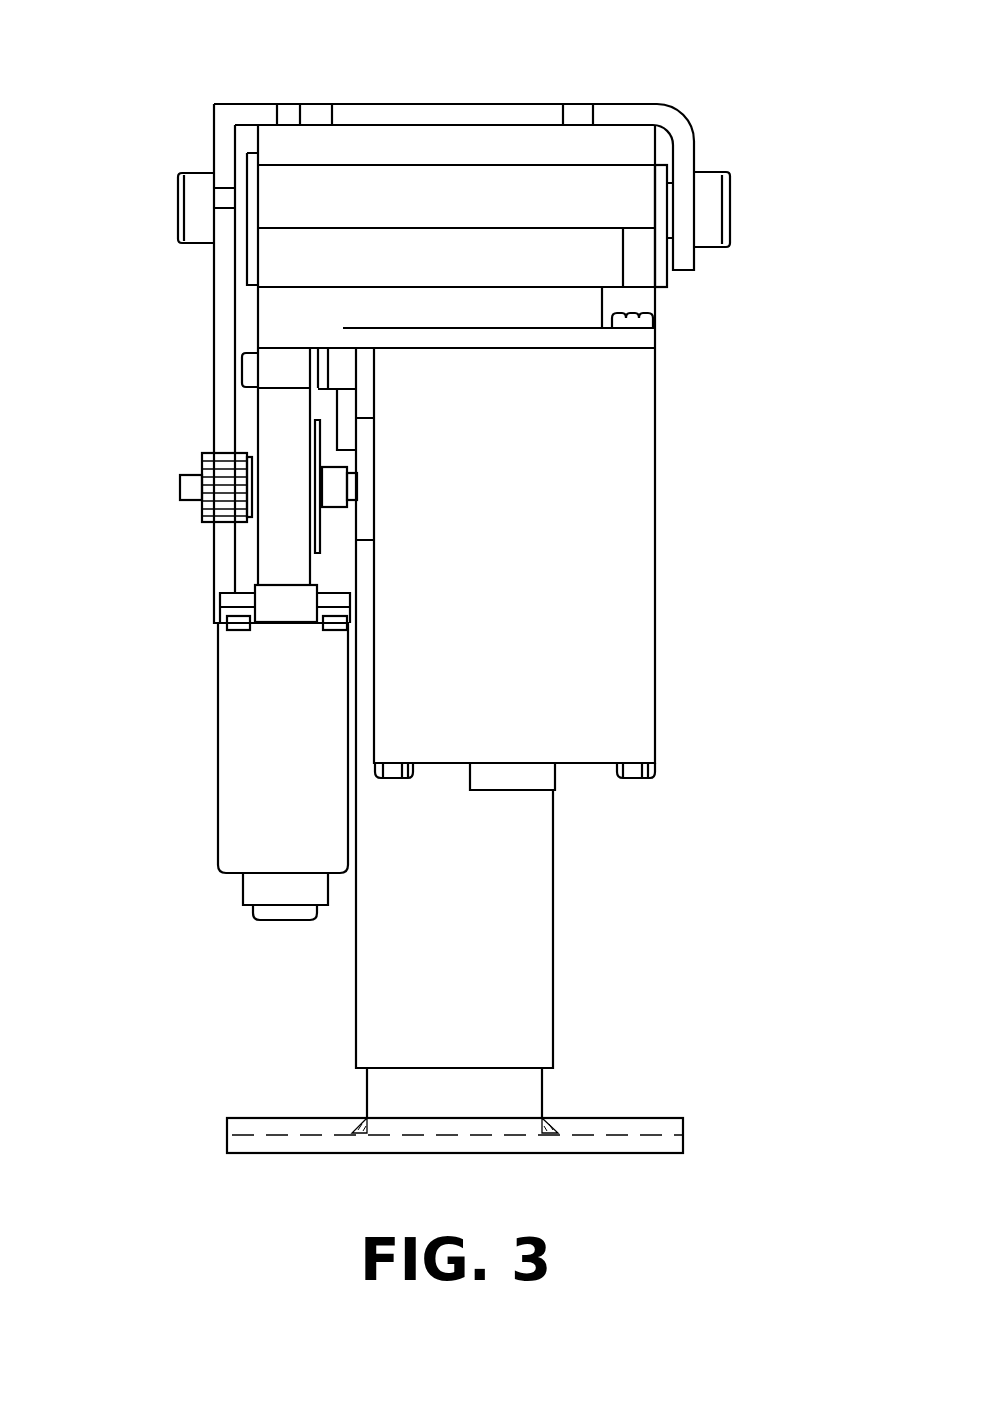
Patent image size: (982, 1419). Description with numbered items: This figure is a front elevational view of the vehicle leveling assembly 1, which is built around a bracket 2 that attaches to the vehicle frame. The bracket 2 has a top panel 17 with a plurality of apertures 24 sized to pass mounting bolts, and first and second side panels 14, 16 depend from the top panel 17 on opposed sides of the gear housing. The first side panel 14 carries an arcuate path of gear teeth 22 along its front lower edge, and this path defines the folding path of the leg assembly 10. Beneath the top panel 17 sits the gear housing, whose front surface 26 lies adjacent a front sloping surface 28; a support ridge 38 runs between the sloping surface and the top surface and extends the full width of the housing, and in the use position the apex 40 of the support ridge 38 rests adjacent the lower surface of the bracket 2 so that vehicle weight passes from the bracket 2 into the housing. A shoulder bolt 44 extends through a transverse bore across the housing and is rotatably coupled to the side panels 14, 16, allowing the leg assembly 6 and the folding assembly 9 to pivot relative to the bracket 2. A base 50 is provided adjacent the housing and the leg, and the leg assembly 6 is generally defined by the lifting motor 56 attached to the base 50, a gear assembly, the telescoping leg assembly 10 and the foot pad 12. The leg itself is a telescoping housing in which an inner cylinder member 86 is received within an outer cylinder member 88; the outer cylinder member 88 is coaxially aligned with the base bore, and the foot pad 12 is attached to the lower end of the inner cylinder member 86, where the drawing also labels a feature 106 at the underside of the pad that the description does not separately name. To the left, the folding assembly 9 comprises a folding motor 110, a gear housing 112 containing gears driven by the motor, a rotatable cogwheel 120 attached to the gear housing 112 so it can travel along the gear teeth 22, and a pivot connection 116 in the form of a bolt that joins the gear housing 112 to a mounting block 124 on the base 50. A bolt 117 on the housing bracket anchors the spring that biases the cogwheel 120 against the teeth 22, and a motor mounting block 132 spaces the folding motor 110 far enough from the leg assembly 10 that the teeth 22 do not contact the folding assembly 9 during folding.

The vehicle leveling assembly 1 is at (790, 474).
The bracket 2 is at (602, 82).
The leg assembly 6 is at (711, 694).
The folding assembly 9 is at (95, 624).
The leg assembly 10 is at (598, 973).
The foot pad 12 is at (608, 1118).
The first side panel 14 is at (213, 275).
The second side panel 16 is at (695, 147).
The top panel 17 is at (437, 104).
The path of gear teeth 22 is at (213, 327).
The apertures 24 is at (313, 112).
The front surface 26 is at (462, 266).
The front sloping surface 28 is at (466, 207).
The support ridge 38 is at (470, 160).
The apex 40 is at (277, 104).
The shoulder bolt 44 is at (180, 172).
The base 50 is at (462, 318).
The lifting motor 56 is at (520, 535).
The inner cylinder member 86 is at (530, 1100).
The outer cylinder member 88 is at (531, 871).
The base plate bottom 106 is at (570, 1155).
The folding motor 110 is at (302, 733).
The gear housing 112 is at (275, 548).
The pivot connection 116 is at (240, 368).
The bolt 117 is at (333, 482).
The rotatable cogwheel 120 is at (202, 455).
The mounting block 124 is at (342, 373).
The motor mounting block 132 is at (222, 598).